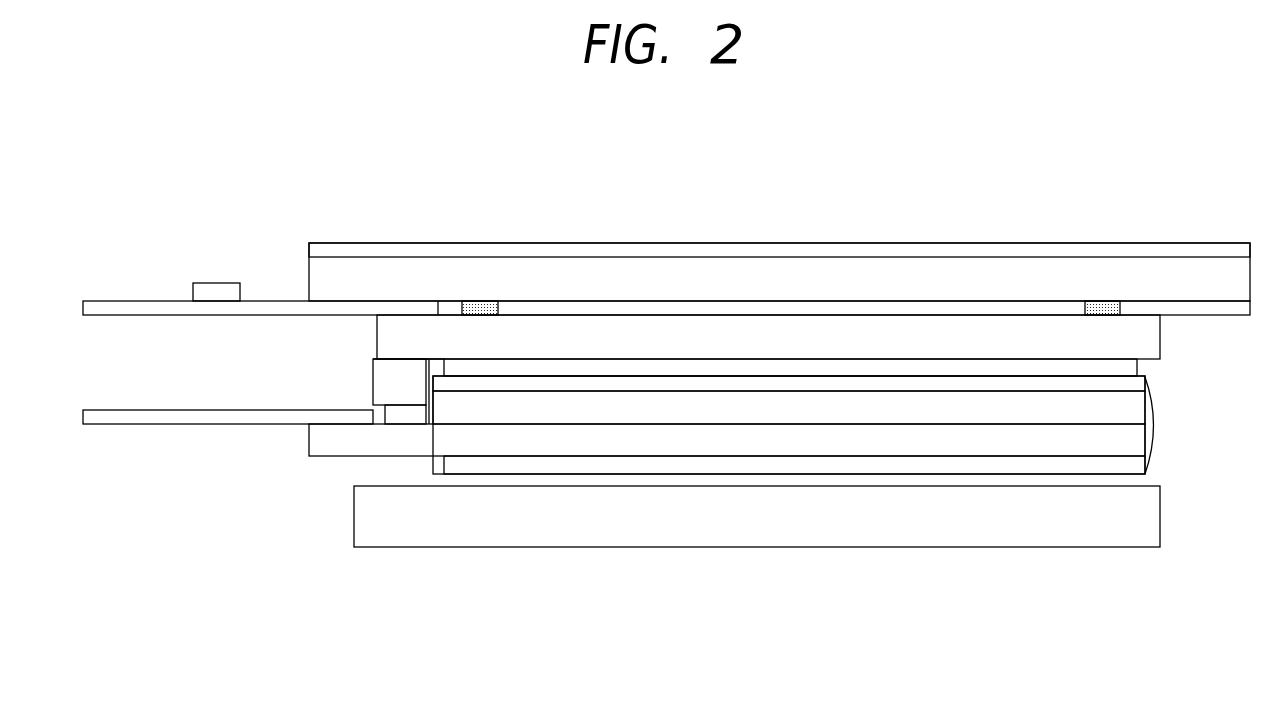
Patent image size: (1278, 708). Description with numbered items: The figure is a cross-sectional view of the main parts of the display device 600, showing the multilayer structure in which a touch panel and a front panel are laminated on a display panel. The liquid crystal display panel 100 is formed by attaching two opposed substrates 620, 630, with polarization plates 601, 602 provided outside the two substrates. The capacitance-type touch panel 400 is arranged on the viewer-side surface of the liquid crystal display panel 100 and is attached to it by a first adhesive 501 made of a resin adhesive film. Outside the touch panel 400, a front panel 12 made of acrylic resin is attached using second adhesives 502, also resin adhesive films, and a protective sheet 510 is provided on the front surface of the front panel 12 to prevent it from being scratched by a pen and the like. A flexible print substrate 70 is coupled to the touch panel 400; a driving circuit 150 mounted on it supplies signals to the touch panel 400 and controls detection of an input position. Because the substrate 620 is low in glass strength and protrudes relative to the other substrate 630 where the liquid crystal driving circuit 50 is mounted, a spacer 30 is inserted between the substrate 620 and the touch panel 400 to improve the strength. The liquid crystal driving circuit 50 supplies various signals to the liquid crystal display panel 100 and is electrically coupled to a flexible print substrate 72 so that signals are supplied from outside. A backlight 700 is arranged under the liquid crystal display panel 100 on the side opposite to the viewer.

The front panel 12 is at (695, 270).
The protective sheet 510 is at (793, 248).
The flexible print substrate 70 is at (154, 305).
The second adhesives 502 is at (1107, 300).
The driving circuit 150 is at (218, 292).
The touch panel 400 is at (1152, 335).
The first adhesive 501 is at (1125, 368).
The liquid crystal display panel 100 is at (1153, 425).
The polarization plate 601 is at (1147, 380).
The substrate 630 is at (1147, 408).
The substrate 620 is at (1147, 443).
The polarization plate 602 is at (1147, 470).
The spacer 30 is at (388, 383).
The liquid crystal driving circuit 50 is at (407, 415).
The flexible print substrate 72 is at (203, 418).
The backlight 700 is at (1148, 522).
The display device 600 is at (733, 560).